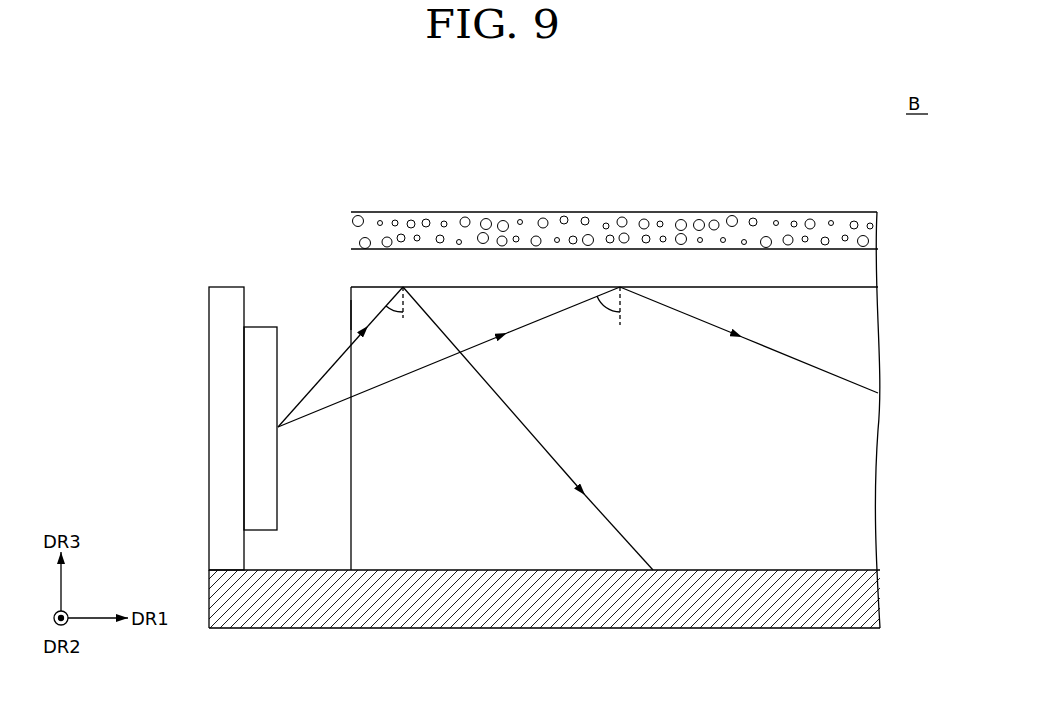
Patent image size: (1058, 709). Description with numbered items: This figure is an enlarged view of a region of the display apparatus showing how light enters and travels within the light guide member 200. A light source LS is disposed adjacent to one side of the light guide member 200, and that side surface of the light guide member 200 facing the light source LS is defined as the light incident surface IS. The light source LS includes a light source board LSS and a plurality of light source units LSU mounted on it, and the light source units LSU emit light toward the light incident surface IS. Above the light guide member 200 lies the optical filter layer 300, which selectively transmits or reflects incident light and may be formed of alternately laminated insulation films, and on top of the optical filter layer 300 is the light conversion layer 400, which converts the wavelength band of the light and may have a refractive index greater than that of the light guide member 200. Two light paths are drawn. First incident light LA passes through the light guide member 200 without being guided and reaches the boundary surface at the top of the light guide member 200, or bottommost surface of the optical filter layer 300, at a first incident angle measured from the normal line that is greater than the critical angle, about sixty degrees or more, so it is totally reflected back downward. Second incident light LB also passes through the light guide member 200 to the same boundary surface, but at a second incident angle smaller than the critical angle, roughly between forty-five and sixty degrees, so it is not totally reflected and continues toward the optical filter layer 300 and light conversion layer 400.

The light conversion layer 400 is at (868, 233).
The optical filter layer 300 is at (868, 270).
The light guide member 200 is at (858, 430).
The light incident surface IS is at (351, 313).
The light source LS is at (180, 428).
The light source board LSS is at (227, 389).
The light source units LSU is at (260, 427).
The second incident light LB is at (465, 428).
The first incident light LA is at (578, 357).